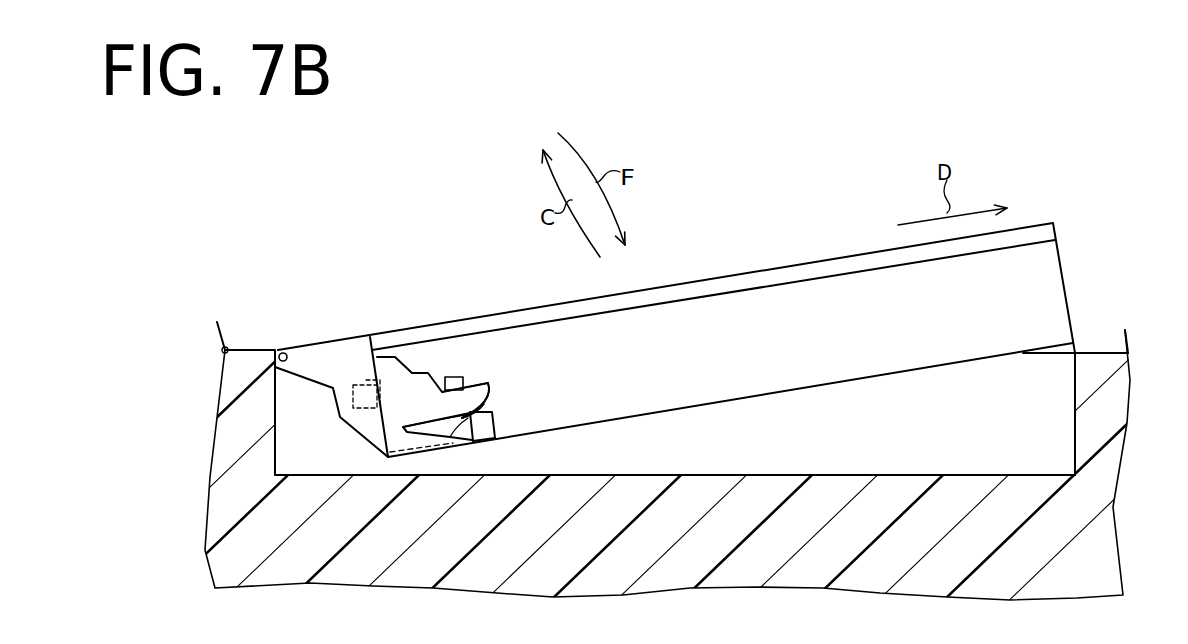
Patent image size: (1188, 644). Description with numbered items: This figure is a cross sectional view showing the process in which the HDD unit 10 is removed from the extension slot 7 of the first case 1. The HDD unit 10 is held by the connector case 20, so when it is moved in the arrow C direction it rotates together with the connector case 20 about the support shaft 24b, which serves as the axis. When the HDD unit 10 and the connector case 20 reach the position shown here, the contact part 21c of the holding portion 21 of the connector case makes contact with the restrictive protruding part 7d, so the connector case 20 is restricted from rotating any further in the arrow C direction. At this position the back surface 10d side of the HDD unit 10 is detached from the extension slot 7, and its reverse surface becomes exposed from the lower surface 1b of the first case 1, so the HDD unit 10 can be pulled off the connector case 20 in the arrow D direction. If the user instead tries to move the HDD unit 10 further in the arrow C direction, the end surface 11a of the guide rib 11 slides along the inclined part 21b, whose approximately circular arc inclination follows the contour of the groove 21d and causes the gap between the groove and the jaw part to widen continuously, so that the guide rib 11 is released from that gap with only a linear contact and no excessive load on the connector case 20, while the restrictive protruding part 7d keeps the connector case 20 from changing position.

The first case 1 is at (1070, 522).
The lower surface of the first case 1b is at (1097, 352).
The extension slot 7 is at (1077, 422).
The restrictive protruding part 7d is at (452, 376).
The HDD unit 10 is at (763, 318).
The back surface of the HDD unit 10d is at (1065, 257).
The guide rib 11 is at (466, 430).
The end surface of the guide rib 11a is at (486, 398).
The connector case 20 is at (330, 362).
The holding portion of the connector case 21 is at (425, 400).
The inclined part 21b is at (493, 428).
The contact part 21c is at (478, 372).
The groove 21d is at (428, 414).
The support shaft 24b is at (284, 351).